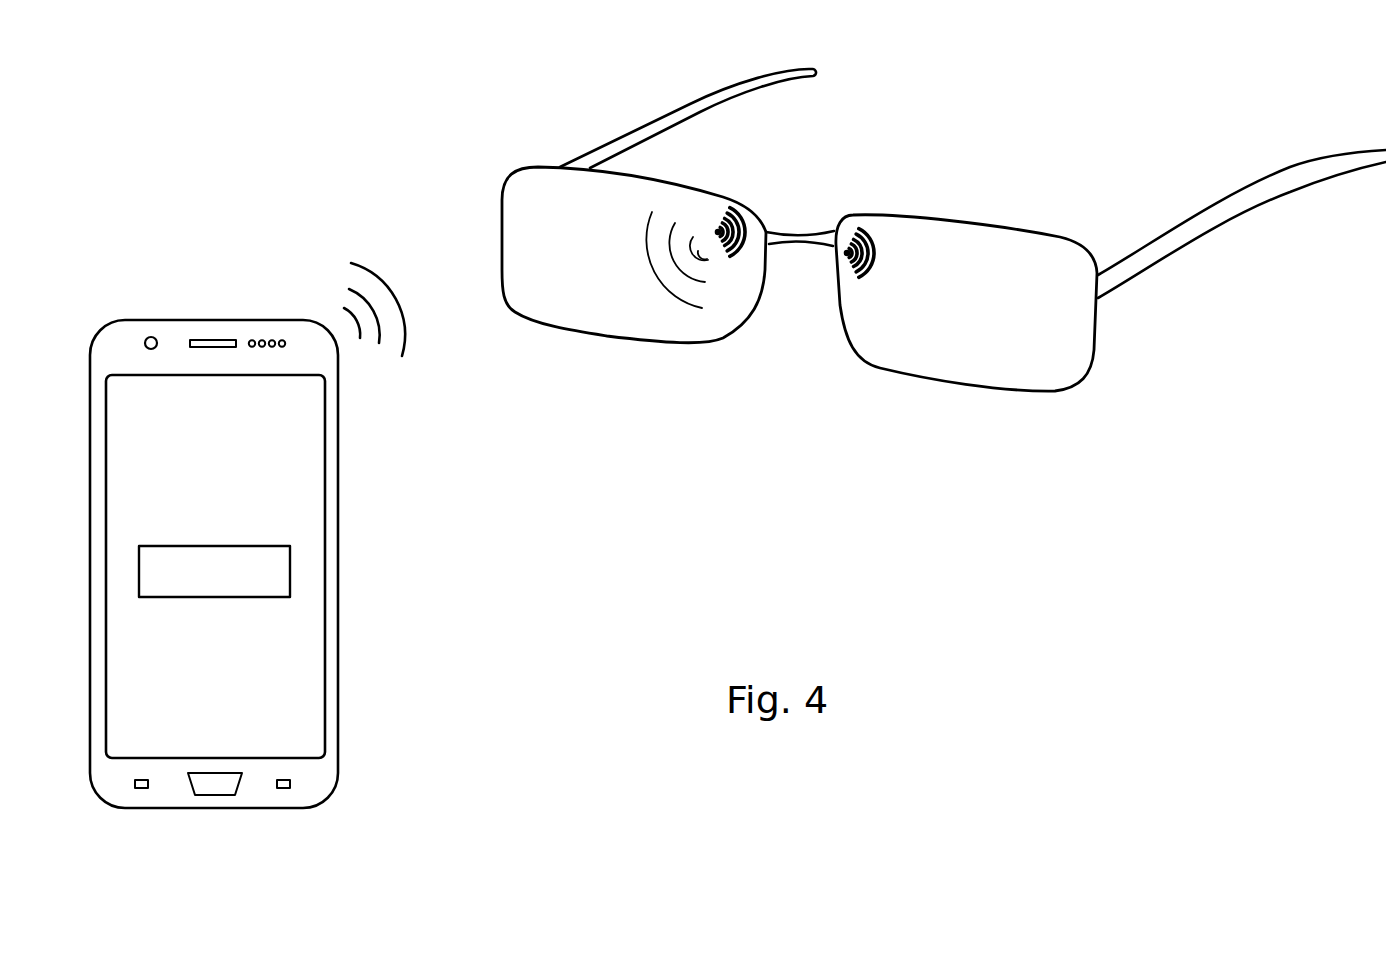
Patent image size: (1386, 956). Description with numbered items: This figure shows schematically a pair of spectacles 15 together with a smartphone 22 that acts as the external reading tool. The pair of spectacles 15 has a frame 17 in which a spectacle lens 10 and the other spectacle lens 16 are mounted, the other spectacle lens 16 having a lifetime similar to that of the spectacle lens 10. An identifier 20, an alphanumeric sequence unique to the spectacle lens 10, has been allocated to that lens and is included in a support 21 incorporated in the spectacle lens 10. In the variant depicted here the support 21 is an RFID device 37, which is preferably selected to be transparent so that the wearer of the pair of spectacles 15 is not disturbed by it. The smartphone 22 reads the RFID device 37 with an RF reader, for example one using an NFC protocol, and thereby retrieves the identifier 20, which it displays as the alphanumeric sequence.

The spectacle lens 10 is at (612, 312).
The pair of spectacles 15 is at (944, 254).
The other spectacle lens 16 is at (977, 367).
The frame 17 is at (703, 188).
The identifier 20 is at (281, 572).
The support 21 is at (874, 216).
The smartphone 22 is at (249, 504).
The RFID device 37 is at (731, 207).